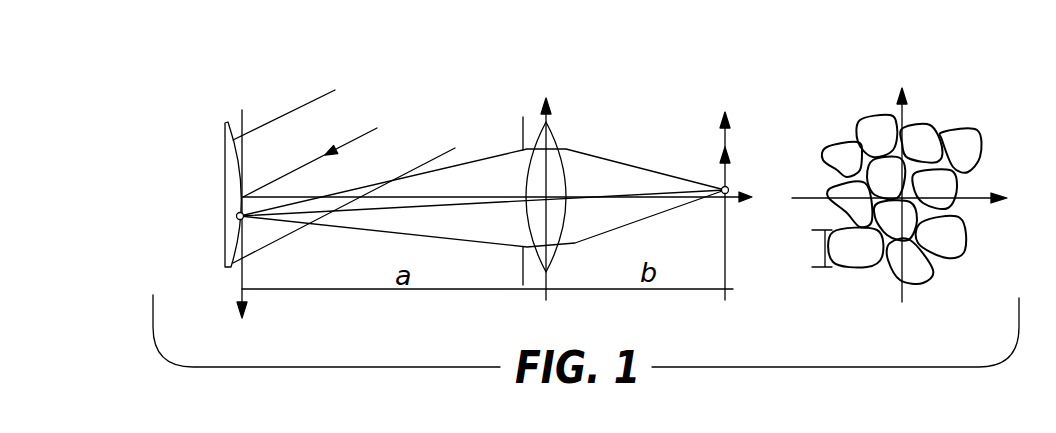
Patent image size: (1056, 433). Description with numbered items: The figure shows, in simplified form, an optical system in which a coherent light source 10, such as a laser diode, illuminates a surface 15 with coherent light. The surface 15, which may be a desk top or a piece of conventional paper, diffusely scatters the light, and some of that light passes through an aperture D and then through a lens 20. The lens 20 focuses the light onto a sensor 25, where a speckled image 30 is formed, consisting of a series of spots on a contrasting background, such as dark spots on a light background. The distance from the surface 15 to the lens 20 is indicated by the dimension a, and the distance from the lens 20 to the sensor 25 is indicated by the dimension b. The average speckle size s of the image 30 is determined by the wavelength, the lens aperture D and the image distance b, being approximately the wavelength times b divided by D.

The coherent light source 10 is at (443, 137).
The surface 15 is at (226, 139).
The lens 20 is at (557, 141).
The sensor 25 is at (728, 187).
The speckled image 30 is at (846, 141).